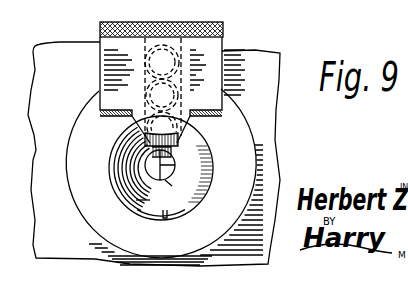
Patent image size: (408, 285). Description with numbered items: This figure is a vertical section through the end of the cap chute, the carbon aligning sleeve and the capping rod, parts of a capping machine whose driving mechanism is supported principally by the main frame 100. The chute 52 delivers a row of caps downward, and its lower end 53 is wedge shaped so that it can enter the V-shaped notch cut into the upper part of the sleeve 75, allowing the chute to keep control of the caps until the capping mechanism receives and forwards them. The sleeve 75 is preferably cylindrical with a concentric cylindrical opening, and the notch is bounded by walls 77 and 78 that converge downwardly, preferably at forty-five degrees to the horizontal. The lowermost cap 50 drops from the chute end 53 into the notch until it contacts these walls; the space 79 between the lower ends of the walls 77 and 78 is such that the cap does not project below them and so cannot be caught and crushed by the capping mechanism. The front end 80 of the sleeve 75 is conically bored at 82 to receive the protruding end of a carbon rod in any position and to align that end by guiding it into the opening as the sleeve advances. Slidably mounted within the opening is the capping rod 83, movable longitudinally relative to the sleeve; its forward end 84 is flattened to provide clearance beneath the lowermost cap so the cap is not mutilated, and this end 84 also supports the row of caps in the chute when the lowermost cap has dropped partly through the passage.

The main frame 100 is at (267, 59).
The chute 52 is at (203, 30).
The lower end of the chute 53 is at (133, 114).
The cap 50 is at (183, 58).
The sleeve 75 is at (130, 201).
The wall of the V-shaped notch 78 is at (192, 126).
The wall of the V-shaped notch 77 is at (145, 144).
The space between the lower ends of the walls 79 is at (175, 168).
The forward end of the capping rod 84 is at (162, 165).
The capping rod 83 is at (178, 192).
The conical bore 82 is at (150, 200).
The front end of the sleeve 80 is at (165, 212).